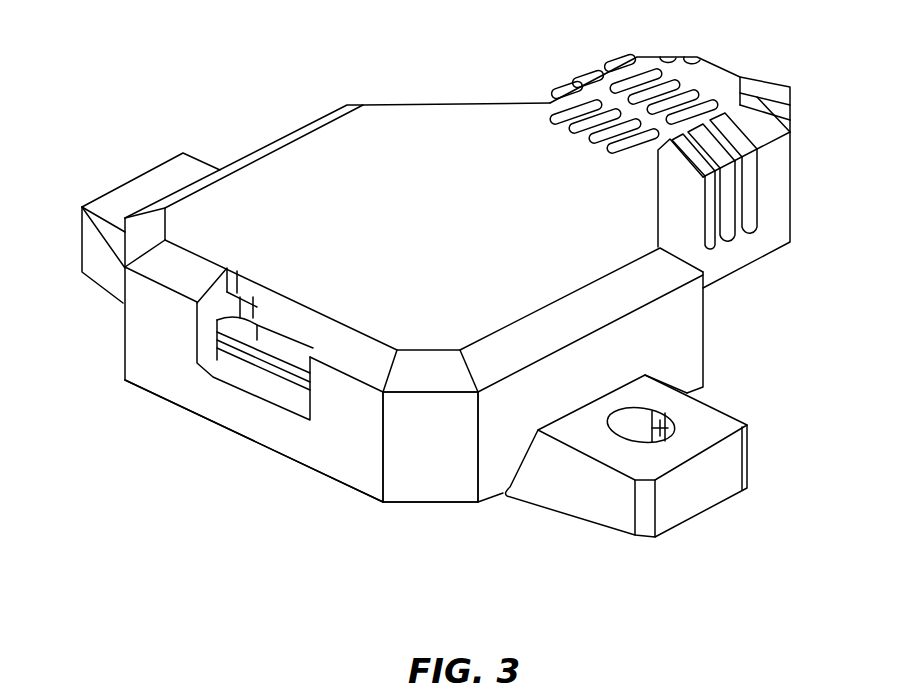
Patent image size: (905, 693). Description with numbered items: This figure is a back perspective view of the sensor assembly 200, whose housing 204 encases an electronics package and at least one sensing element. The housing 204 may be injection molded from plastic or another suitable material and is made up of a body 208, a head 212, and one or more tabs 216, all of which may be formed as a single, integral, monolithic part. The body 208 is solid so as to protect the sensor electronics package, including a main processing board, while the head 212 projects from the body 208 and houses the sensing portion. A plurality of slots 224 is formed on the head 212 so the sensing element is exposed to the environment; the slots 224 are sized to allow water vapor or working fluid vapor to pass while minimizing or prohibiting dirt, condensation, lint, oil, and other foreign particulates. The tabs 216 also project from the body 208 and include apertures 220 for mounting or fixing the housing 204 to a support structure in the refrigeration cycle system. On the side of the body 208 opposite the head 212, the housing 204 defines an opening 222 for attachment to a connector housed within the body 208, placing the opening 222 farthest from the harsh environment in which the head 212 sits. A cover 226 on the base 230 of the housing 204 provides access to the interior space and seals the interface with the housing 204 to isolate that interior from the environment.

The sensor assembly 200 is at (198, 54).
The housing 204 is at (82, 294).
The body 208 is at (438, 123).
The head 212 is at (792, 163).
The tabs 216 is at (107, 237).
The apertures 220 is at (664, 428).
The opening 222 is at (287, 350).
The slots 224 is at (635, 80).
The cover 226 is at (430, 502).
The base 230 is at (328, 488).